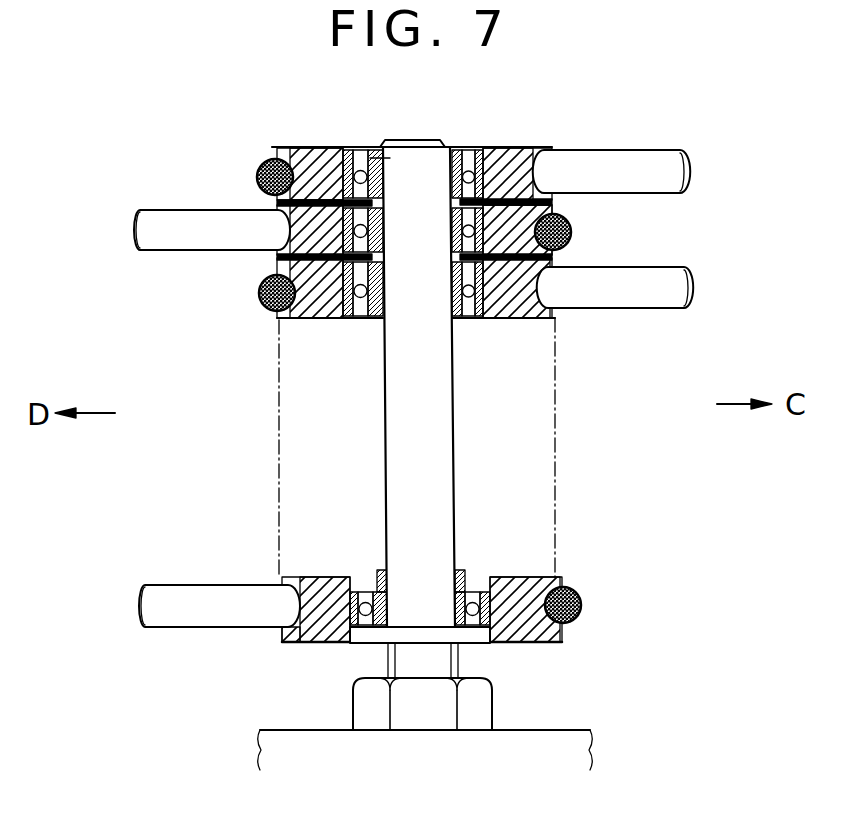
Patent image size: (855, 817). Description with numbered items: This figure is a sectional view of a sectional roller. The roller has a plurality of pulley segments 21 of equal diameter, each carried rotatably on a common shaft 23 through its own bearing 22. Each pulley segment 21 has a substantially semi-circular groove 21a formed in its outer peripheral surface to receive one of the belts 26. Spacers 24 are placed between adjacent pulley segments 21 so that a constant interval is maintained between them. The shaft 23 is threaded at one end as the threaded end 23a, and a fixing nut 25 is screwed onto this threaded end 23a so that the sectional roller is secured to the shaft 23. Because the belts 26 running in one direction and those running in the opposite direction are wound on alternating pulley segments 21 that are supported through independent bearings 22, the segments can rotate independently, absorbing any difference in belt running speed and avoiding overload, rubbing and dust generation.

The pulley segment 21 is at (527, 147).
The semi-circular groove 21a is at (268, 240).
The bearing 22 is at (453, 147).
The shaft 23 is at (367, 147).
The threaded end 23a is at (425, 652).
The spacer 24 is at (550, 208).
The fixing nut 25 is at (477, 698).
The belt 26 is at (677, 183).